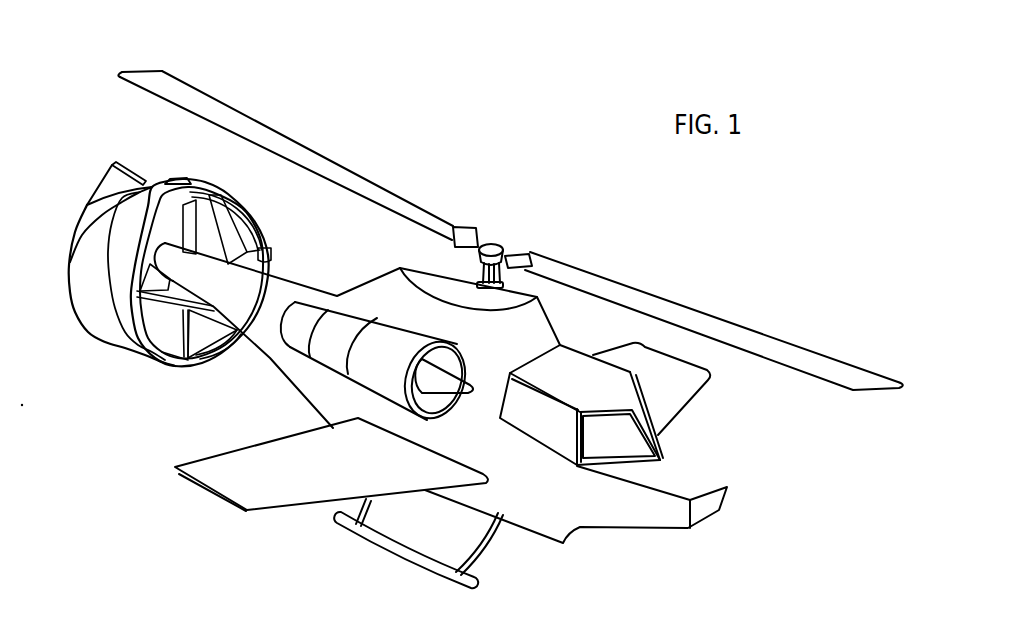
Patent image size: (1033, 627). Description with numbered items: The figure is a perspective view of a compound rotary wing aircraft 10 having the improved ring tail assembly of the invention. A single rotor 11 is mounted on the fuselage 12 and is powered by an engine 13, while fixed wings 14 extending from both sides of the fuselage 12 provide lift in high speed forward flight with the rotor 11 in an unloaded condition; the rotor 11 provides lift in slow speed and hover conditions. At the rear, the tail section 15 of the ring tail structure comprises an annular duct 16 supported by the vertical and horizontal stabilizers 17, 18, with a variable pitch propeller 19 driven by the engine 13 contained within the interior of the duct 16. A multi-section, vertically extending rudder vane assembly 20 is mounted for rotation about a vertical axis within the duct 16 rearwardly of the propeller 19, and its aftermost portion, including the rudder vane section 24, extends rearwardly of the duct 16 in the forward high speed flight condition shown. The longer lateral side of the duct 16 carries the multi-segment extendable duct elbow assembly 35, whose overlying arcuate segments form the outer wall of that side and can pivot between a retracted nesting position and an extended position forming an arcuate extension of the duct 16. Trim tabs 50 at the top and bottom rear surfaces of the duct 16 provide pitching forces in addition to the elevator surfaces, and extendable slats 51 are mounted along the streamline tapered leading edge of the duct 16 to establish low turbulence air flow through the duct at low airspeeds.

The helicopter 10 is at (736, 447).
The rotor 11 is at (660, 307).
The fuselage 12 is at (382, 274).
The engine 13 is at (386, 372).
The fixed wings 14 is at (333, 470).
The tail section 15 is at (172, 373).
The annular duct 16 is at (194, 190).
The vertical stabilizer 17 is at (215, 249).
The horizontal stabilizer 18 is at (266, 263).
The variable pitch propeller 19 is at (183, 227).
The rudder vane assembly 20 is at (103, 175).
The rudder vane section 24 is at (121, 178).
The extendable duct elbow assembly 35 is at (90, 251).
The trim tabs 50 is at (176, 176).
The extendable slats 51 is at (143, 342).